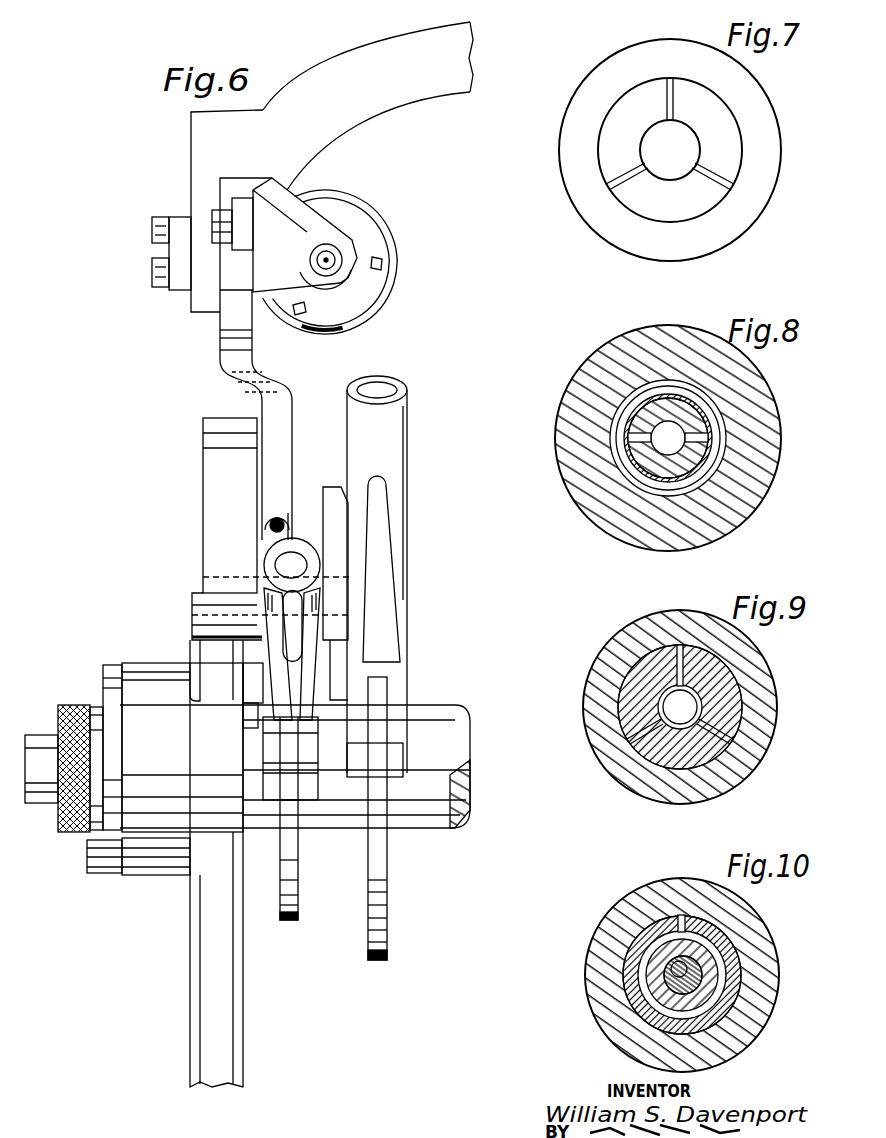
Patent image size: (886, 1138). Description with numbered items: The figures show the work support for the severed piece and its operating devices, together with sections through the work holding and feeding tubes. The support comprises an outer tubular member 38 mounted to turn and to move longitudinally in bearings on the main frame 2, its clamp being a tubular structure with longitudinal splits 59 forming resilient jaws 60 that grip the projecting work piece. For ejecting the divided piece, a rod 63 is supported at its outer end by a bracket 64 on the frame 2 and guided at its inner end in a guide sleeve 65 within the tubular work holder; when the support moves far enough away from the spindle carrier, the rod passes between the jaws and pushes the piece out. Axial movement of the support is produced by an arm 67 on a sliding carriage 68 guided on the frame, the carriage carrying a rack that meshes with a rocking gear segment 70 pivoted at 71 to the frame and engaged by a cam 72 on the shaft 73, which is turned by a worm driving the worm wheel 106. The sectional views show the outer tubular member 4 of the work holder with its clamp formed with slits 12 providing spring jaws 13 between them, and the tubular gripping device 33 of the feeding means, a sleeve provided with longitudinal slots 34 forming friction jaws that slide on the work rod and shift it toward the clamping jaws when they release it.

In FIG. 6, the frame 2 is at (191, 155).
In FIG. 7, the outer tubular member 4 is at (626, 245).
In FIG. 8, the outer tubular member 4 is at (580, 393).
In FIG. 7, the slits or slots 12 is at (728, 188).
In FIG. 8, the slits or slots 12 is at (720, 475).
In FIG. 7, the spring jaws 13 is at (631, 105).
In FIG. 8, the spring jaws 13 is at (680, 492).
In FIG. 8, the tubular gripping device 33 is at (656, 470).
In FIG. 8, the longitudinally extending slots 34 is at (630, 437).
In FIG. 9, the outer tubular member 38 is at (758, 740).
In FIG. 10, the outer tubular member 38 is at (590, 975).
In FIG. 9, the longitudinal splits 59 is at (652, 732).
In FIG. 10, the longitudinal splits 59 is at (684, 915).
In FIG. 9, the resilient jaws 60 is at (630, 678).
In FIG. 10, the resilient jaws 60 is at (742, 965).
In FIG. 6, the ejector rod 63 is at (330, 268).
In FIG. 9, the ejector rod 63 is at (685, 726).
In FIG. 10, the ejector rod 63 is at (690, 965).
In FIG. 6, the bracket 64 is at (306, 224).
In FIG. 10, the guide sleeve 65 is at (662, 1018).
In FIG. 6, the arm 67 is at (290, 192).
In FIG. 6, the sliding carriage 68 is at (230, 308).
In FIG. 6, the rocking gear segment 70 is at (284, 436).
In FIG. 6, the pivot 71 is at (222, 586).
In FIG. 6, the cam 72 is at (290, 921).
In FIG. 6, the shaft 73 is at (325, 830).
In FIG. 6, the worm wheel 106 is at (195, 1035).